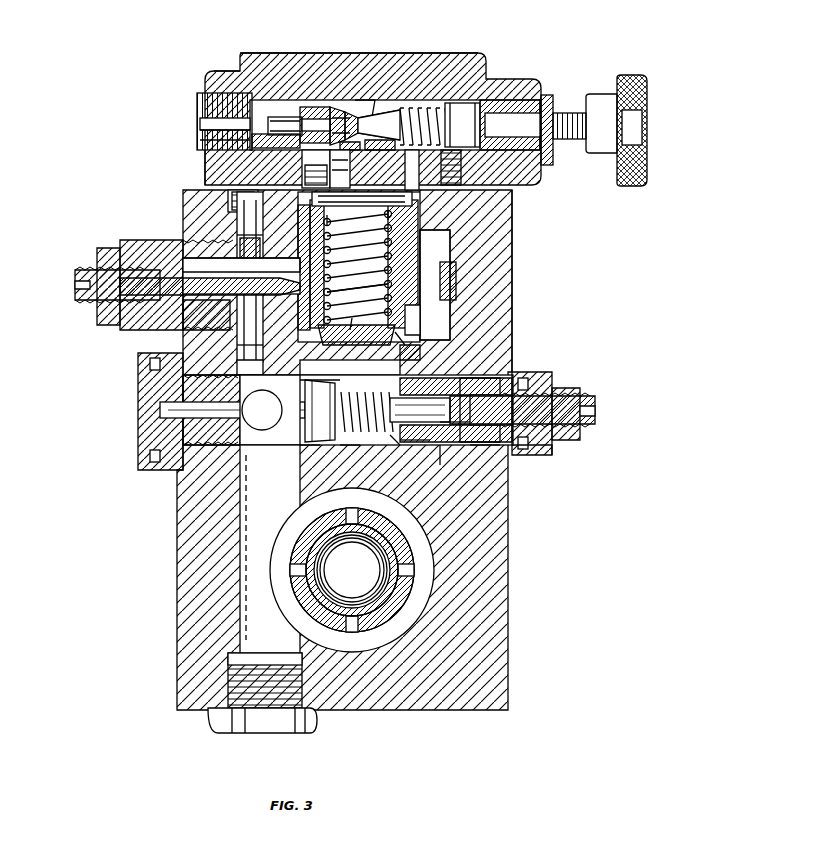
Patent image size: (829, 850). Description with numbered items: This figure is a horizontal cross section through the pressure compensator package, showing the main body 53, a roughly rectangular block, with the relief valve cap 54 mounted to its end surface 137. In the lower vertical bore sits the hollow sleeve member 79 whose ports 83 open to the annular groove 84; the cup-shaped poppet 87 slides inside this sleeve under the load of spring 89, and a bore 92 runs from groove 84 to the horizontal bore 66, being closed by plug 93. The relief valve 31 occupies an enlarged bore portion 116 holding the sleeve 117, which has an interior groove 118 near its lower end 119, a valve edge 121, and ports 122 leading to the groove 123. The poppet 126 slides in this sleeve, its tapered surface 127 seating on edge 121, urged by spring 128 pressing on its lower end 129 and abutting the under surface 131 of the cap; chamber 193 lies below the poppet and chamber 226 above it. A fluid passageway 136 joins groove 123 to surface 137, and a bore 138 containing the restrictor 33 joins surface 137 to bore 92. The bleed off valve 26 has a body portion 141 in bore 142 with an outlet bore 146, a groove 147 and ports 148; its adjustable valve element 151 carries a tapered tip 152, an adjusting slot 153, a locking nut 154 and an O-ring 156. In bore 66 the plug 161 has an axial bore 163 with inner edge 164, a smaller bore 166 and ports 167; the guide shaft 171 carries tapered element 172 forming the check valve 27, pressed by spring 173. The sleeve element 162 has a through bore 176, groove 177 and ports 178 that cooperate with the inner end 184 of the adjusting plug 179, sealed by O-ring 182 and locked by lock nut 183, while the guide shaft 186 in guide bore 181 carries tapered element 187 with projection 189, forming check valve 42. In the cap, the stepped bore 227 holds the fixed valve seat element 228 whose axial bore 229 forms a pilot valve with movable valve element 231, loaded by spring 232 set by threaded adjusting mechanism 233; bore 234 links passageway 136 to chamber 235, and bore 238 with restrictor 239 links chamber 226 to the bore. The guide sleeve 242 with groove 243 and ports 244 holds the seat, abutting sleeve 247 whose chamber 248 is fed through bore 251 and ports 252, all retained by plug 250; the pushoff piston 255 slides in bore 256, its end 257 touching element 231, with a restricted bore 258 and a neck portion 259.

The bleed off valve 26 is at (106, 286).
The check valve 27 is at (350, 448).
The relief valve 31 is at (240, 43).
The restrictor 33 is at (232, 205).
The check valve 42 is at (410, 445).
The main body 53 is at (158, 583).
The relief valve cap 54 is at (507, 62).
The horizontal bore 66 is at (316, 448).
The sleeve member 79 is at (388, 602).
The ports 83 is at (292, 553).
The annular groove 84 is at (426, 600).
The poppet 87 is at (380, 587).
The spring 89 is at (372, 540).
The bore 92 is at (247, 625).
The plug 93 is at (274, 733).
The enlarged bore portion 116 is at (411, 348).
The sleeve 117 is at (455, 238).
The annular groove 118 is at (405, 318).
The lower end of sleeve 119 is at (395, 345).
The valve edge 121 is at (405, 332).
The ports 122 is at (264, 358).
The groove 123 is at (300, 226).
The poppet 126 is at (385, 250).
The tapered lower peripheral surface 127 is at (385, 300).
The spring 128 is at (385, 230).
The lower end of poppet 129 is at (356, 314).
The under surface of cap 131 is at (410, 178).
The fluid passageway 136 is at (456, 278).
The end surface of body 137 is at (514, 205).
The bore 138 is at (237, 243).
The body portion of bleed off valve 141 is at (140, 332).
The bore 142 is at (185, 258).
The outlet bore 146 is at (262, 252).
The groove 147 is at (263, 350).
The ports 148 is at (241, 266).
The adjustable valve element 151 is at (90, 305).
The conically tapered tip 152 is at (210, 287).
The adjusting slot 153 is at (78, 286).
The locking nut 154 is at (106, 247).
The O-ring 156 is at (206, 325).
The plug 161 is at (138, 388).
The sleeve element 162 is at (540, 372).
The axial bore of plug 163 is at (228, 383).
The inner edge 164 is at (350, 364).
The bore 166 is at (165, 407).
The ports 167 is at (270, 550).
The guide shaft 171 is at (207, 412).
The conically tapered valve element 172 is at (329, 414).
The spring 173 is at (350, 386).
The through bore 176 is at (487, 382).
The annular groove 177 is at (450, 382).
The ports 178 is at (445, 466).
The adjusting plug 179 is at (585, 410).
The guide bore 181 is at (518, 456).
The O-ring 182 is at (481, 446).
The lock nut 183 is at (566, 388).
The inner end of plug 184 is at (453, 445).
The guide shaft 186 is at (522, 410).
The conically tapered valve element 187 is at (404, 422).
The cylindrical projection 189 is at (382, 416).
The chamber 193 is at (396, 442).
The chamber 226 is at (330, 197).
The stepped bore of cap 227 is at (441, 112).
The fixed valve seat element 228 is at (347, 115).
The axial bore 229 is at (372, 118).
The movable valve element 231 is at (393, 133).
The spring 232 is at (448, 122).
The threaded adjusting mechanism 233 is at (571, 105).
The bore 234 is at (462, 165).
The chamber 235 is at (426, 112).
The bore 238 is at (342, 175).
The restrictor 239 is at (322, 177).
The guide sleeve 242 is at (286, 147).
The groove or neck portion 243 is at (335, 112).
The ports 244 is at (347, 147).
The sleeve 247 is at (238, 98).
The internal chamber 248 is at (212, 118).
The plug 250 is at (210, 100).
The bore 251 is at (208, 172).
The ports 252 is at (215, 134).
The pushoff piston 255 is at (341, 116).
The bore of guide sleeve 256 is at (312, 108).
The end of piston 257 is at (385, 150).
The restricted bore 258 is at (295, 125).
The neck portion 259 is at (362, 100).